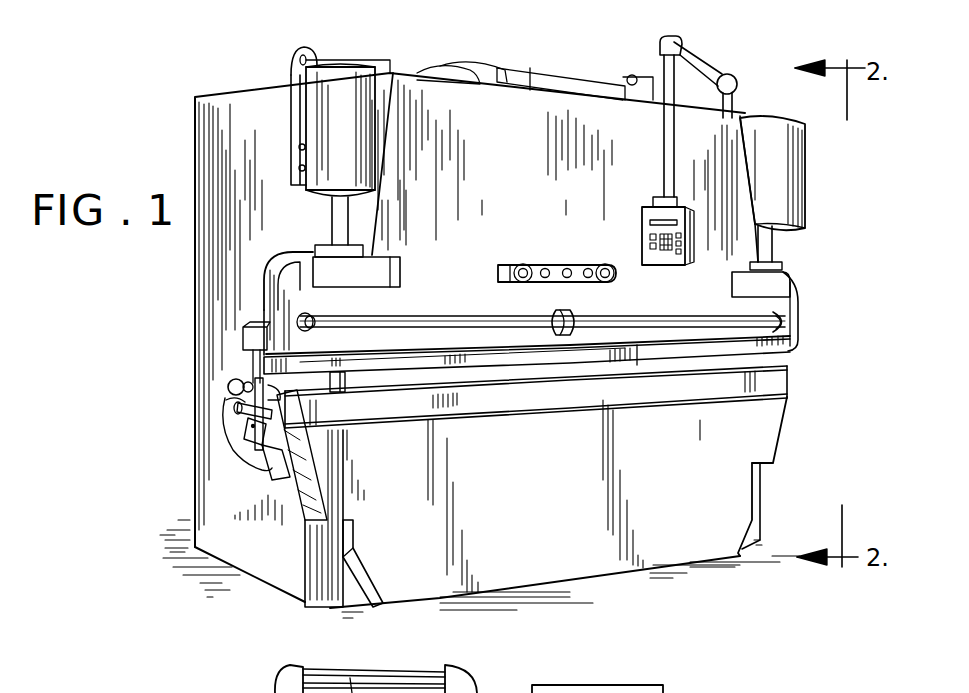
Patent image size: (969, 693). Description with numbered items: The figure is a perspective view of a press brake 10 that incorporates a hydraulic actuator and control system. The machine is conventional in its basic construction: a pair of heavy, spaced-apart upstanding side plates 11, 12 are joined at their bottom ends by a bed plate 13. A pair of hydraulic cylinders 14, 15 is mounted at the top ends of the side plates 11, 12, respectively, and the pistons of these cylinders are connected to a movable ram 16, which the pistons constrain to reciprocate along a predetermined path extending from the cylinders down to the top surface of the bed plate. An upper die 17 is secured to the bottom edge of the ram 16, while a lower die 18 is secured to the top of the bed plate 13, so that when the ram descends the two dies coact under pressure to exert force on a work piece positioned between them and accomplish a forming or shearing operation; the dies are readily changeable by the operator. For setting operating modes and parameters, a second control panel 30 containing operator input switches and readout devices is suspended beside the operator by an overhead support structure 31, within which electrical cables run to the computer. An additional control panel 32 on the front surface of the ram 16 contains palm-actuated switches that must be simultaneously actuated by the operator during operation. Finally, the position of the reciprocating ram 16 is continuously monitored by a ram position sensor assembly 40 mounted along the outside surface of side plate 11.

The press brake 10 is at (180, 155).
The side plate 11 is at (302, 576).
The side plate 12 is at (750, 520).
The bed plate 13 is at (653, 551).
The hydraulic cylinder 14 is at (340, 78).
The hydraulic cylinder 15 is at (789, 172).
The movable ram 16 is at (730, 244).
The upper die 17 is at (778, 346).
The lower die 18 is at (778, 380).
The second control panel 30 is at (642, 224).
The overhead support structure 31 is at (698, 62).
The additional control panel 32 is at (522, 265).
The ram position sensor assembly 40 is at (240, 428).